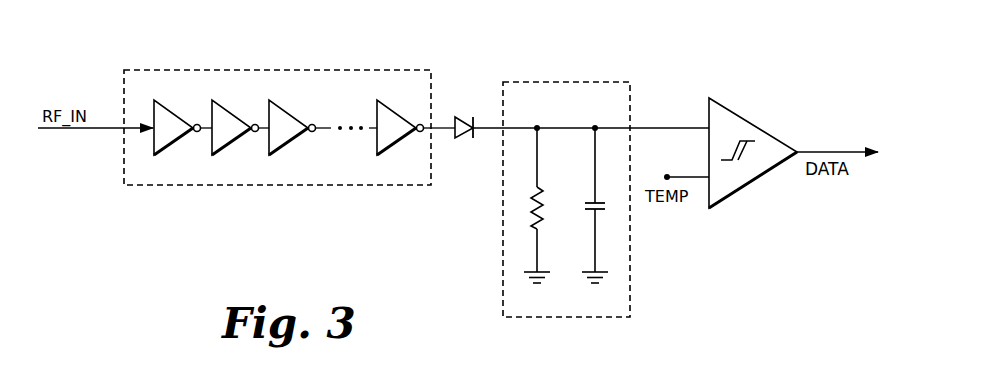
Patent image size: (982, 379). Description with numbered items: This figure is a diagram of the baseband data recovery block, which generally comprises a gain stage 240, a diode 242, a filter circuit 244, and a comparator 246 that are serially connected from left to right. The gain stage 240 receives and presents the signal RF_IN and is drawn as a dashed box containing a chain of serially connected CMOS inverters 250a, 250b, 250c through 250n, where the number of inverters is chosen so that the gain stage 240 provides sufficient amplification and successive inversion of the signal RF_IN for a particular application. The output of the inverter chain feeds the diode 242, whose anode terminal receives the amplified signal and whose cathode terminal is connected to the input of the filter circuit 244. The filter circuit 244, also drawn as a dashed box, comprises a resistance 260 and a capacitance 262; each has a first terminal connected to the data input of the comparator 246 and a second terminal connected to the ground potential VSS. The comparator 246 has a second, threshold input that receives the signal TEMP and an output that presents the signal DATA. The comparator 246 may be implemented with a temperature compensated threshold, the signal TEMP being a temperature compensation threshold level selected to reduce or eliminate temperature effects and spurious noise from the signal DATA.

The gain stage 240 is at (281, 70).
The diode 242 is at (470, 113).
The filter circuit 244 is at (586, 82).
The comparator 246 is at (742, 187).
The CMOS inverter 250a is at (172, 148).
The CMOS inverter 250b is at (230, 148).
The CMOS inverter 250c is at (287, 148).
The CMOS inverter 250n is at (395, 148).
The resistance 260 is at (533, 208).
The capacitance 262 is at (600, 209).